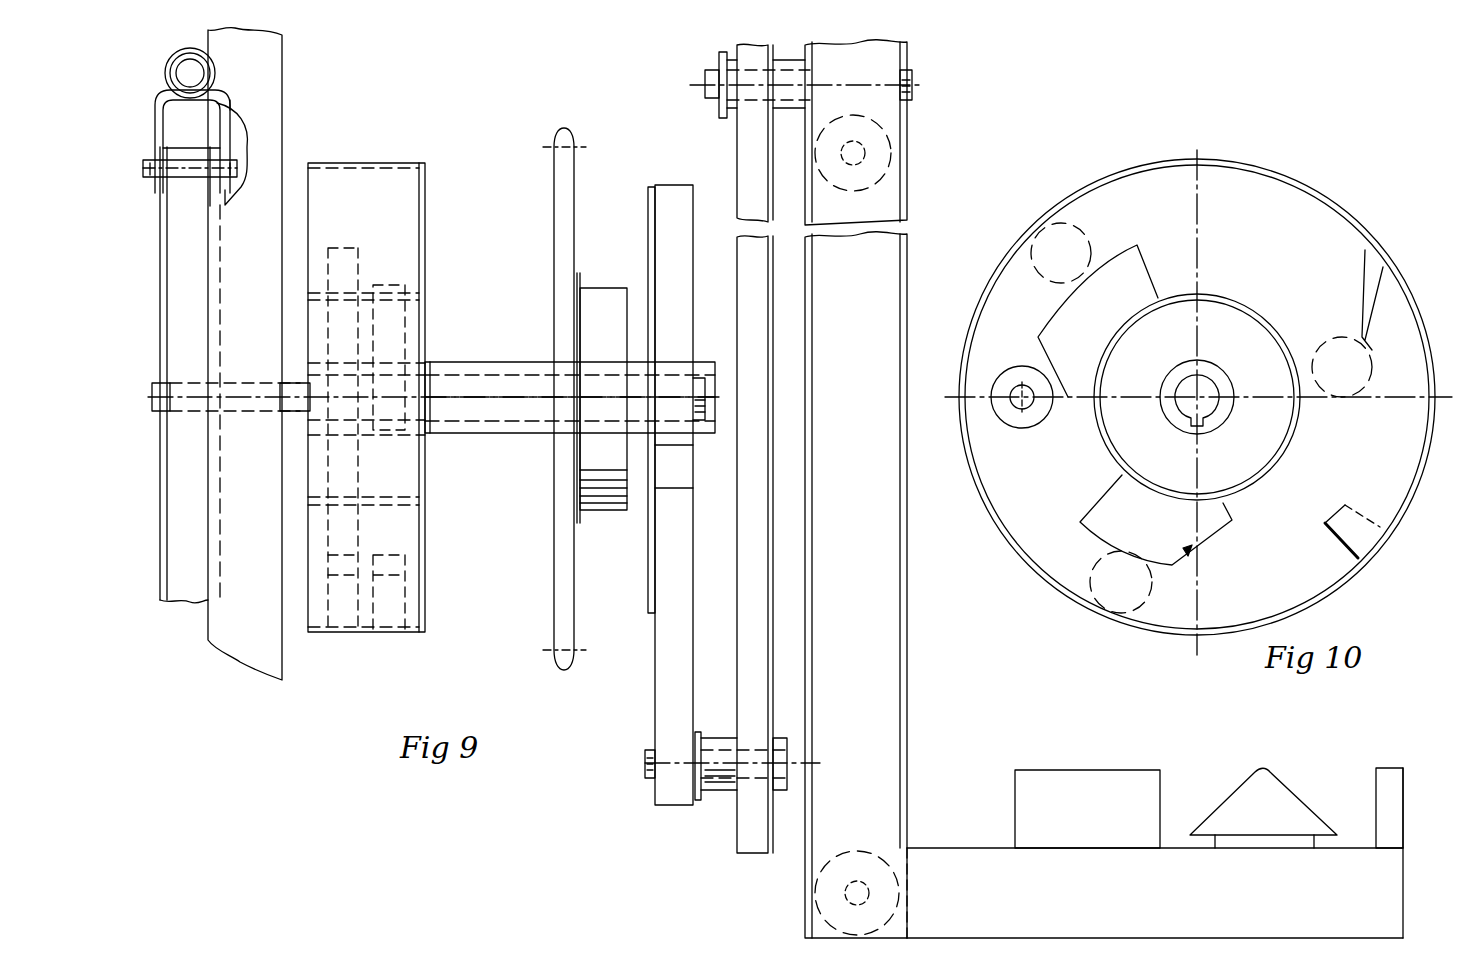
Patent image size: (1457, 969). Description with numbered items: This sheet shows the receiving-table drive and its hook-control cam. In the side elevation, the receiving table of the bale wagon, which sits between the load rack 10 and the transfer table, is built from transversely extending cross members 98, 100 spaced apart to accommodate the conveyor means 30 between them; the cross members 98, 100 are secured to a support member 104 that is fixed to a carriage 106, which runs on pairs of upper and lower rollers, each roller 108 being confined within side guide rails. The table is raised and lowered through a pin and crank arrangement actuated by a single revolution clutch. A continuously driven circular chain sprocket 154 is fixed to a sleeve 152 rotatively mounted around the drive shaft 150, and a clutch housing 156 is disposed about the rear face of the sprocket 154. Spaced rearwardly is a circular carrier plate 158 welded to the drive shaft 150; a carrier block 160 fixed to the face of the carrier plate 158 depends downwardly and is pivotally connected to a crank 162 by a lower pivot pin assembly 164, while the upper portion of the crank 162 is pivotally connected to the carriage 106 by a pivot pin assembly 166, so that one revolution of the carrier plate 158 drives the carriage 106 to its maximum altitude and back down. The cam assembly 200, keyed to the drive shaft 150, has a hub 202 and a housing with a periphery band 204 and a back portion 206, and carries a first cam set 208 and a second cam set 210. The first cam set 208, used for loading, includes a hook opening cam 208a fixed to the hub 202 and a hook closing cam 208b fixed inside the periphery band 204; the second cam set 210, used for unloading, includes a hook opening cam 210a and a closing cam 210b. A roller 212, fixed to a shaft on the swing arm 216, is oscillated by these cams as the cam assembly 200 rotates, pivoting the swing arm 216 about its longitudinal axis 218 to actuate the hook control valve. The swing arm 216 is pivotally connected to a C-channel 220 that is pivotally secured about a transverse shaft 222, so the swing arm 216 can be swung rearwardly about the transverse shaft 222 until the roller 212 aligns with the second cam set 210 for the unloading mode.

In FIG. 9, the load rack 10 is at (297, 710).
In FIG. 9, the conveyor means 30 is at (1245, 788).
In FIG. 9, the cross member 98 is at (1055, 775).
In FIG. 9, the cross member 100 is at (1392, 772).
In FIG. 9, the support member 104 is at (940, 858).
In FIG. 9, the carriage 106 is at (908, 118).
In FIG. 9, the roller 108 is at (897, 164).
In FIG. 9, the drive shaft 150 is at (470, 433).
In FIG. 10, the drive shaft 150 is at (1210, 405).
In FIG. 9, the sleeve 152 is at (470, 362).
In FIG. 9, the chain sprocket 154 is at (574, 146).
In FIG. 9, the clutch housing 156 is at (600, 288).
In FIG. 9, the carrier plate 158 is at (648, 215).
In FIG. 9, the carrier block 160 is at (693, 560).
In FIG. 9, the crank 162 is at (770, 615).
In FIG. 9, the lower pivot pin assembly 164 is at (722, 800).
In FIG. 9, the pivot pin assembly 166 is at (728, 38).
In FIG. 10, the cam assembly 200 is at (1305, 173).
In FIG. 10, the hub 202 is at (1243, 307).
In FIG. 10, the periphery band 204 is at (1136, 170).
In FIG. 10, the back portion 206 is at (1266, 221).
In FIG. 9, the first cam set 208 is at (395, 285).
In FIG. 10, the hook opening cam 208a is at (1118, 257).
In FIG. 10, the hook closing cam 208b is at (1365, 300).
In FIG. 9, the second cam set 210 is at (350, 245).
In FIG. 10, the hook opening cam 210a is at (1330, 525).
In FIG. 10, the closing cam 210b is at (1110, 498).
In FIG. 10, the roller 212 is at (1030, 370).
In FIG. 9, the swing arm 216 is at (162, 272).
In FIG. 9, the longitudinal axis 218 is at (152, 166).
In FIG. 9, the C-channel 220 is at (155, 106).
In FIG. 9, the transverse shaft 222 is at (185, 68).